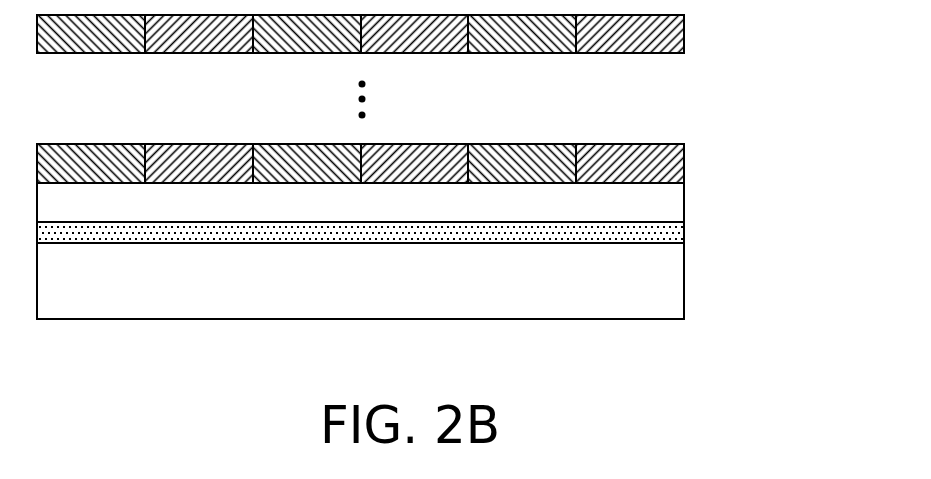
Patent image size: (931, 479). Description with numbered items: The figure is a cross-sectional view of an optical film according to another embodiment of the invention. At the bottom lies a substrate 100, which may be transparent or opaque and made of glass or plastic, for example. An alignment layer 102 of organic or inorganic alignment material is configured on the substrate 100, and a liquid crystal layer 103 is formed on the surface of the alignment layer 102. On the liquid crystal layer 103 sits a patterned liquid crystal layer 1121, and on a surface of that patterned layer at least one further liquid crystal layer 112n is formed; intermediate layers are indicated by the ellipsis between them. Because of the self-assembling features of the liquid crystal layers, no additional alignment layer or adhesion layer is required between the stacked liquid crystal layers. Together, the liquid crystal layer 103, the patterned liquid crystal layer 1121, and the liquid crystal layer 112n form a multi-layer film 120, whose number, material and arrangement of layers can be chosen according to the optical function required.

The liquid crystal layer 112n is at (682, 39).
The patterned liquid crystal layer 1121 is at (667, 163).
The liquid crystal layer 103 is at (663, 200).
The alignment layer 102 is at (683, 225).
The substrate 100 is at (667, 299).
The multi-layer film 120 is at (793, 18).